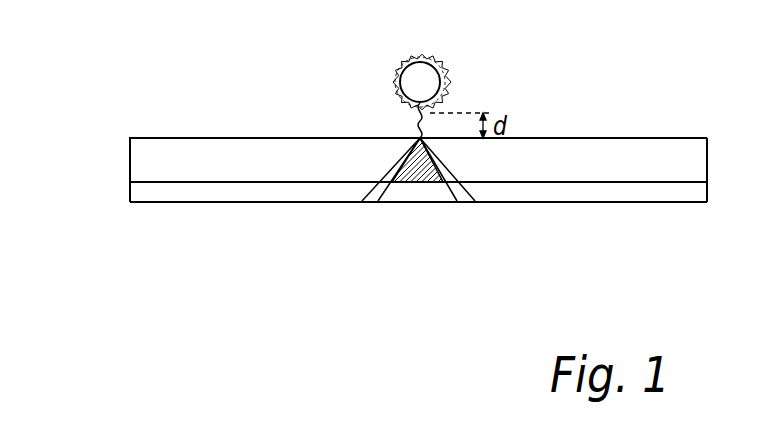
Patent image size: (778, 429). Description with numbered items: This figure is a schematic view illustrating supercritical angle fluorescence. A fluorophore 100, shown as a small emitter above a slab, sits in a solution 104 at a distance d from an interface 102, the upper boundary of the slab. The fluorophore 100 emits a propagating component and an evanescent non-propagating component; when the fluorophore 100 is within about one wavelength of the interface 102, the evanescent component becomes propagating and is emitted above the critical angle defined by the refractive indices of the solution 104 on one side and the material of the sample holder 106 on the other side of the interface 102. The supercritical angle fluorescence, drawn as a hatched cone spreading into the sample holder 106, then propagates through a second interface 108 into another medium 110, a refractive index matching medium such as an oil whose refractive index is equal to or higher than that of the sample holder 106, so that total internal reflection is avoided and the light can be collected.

The fluorophore 100 is at (424, 84).
The interface 102 is at (148, 137).
The solution 104 is at (598, 103).
The sample holder 106 is at (670, 155).
The second interface 108 is at (127, 182).
The refractive index matching medium 110 is at (654, 192).